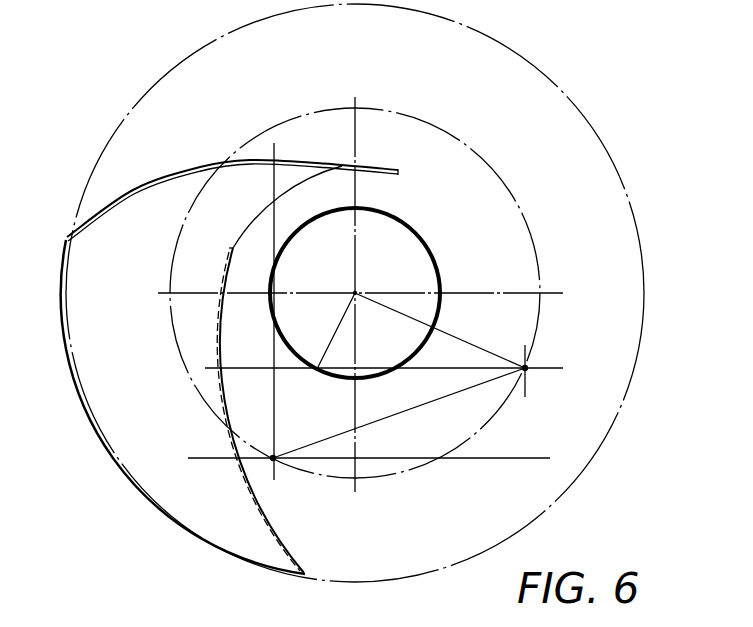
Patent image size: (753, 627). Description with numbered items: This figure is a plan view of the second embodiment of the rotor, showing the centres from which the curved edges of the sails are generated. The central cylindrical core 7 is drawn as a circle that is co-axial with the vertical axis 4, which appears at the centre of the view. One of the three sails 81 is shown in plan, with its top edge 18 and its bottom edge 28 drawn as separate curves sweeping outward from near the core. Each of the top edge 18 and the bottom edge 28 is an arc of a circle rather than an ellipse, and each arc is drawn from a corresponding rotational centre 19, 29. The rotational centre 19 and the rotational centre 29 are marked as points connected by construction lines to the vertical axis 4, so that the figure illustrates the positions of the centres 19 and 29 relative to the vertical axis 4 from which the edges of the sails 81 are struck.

The vertical axis 4 is at (355, 293).
The central cylindrical core 7 is at (432, 248).
The top edge 18 is at (191, 168).
The rotational centre 19 is at (273, 457).
The bottom edge 28 is at (270, 532).
The rotational centre 29 is at (527, 369).
The sail 81 is at (142, 401).